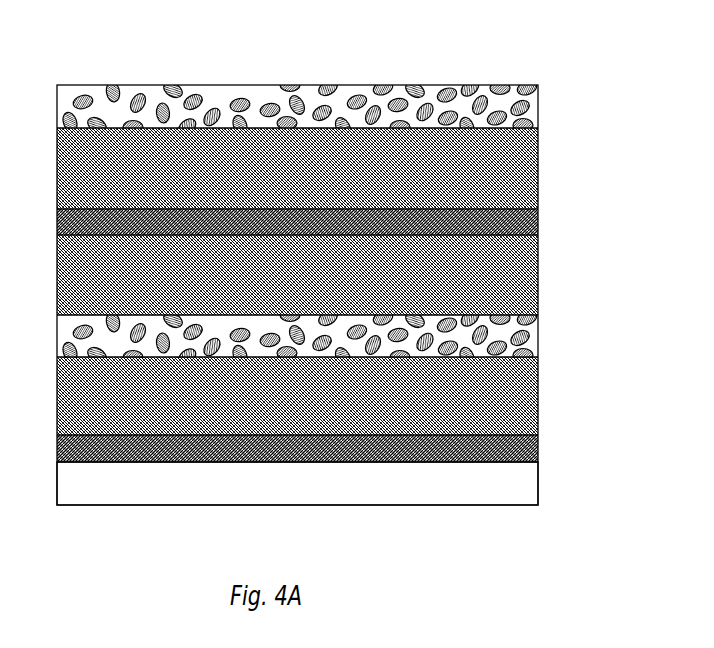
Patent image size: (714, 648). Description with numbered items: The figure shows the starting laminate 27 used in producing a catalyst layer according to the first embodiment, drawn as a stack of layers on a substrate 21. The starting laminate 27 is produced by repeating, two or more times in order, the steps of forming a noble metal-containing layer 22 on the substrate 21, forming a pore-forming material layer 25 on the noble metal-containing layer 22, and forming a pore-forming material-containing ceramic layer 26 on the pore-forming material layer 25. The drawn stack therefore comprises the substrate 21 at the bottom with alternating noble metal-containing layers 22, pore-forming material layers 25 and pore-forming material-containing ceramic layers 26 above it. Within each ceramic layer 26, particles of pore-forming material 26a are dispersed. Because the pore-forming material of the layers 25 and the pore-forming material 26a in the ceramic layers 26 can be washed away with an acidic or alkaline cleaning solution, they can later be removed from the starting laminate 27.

The substrate 21 is at (520, 487).
The noble metal-containing layer 22 is at (535, 218).
The pore-forming material layer 25 is at (525, 178).
The pore-forming material-containing ceramic layer 26 is at (543, 98).
The pore-forming material 26a is at (484, 99).
The starting laminate 27 is at (303, 66).